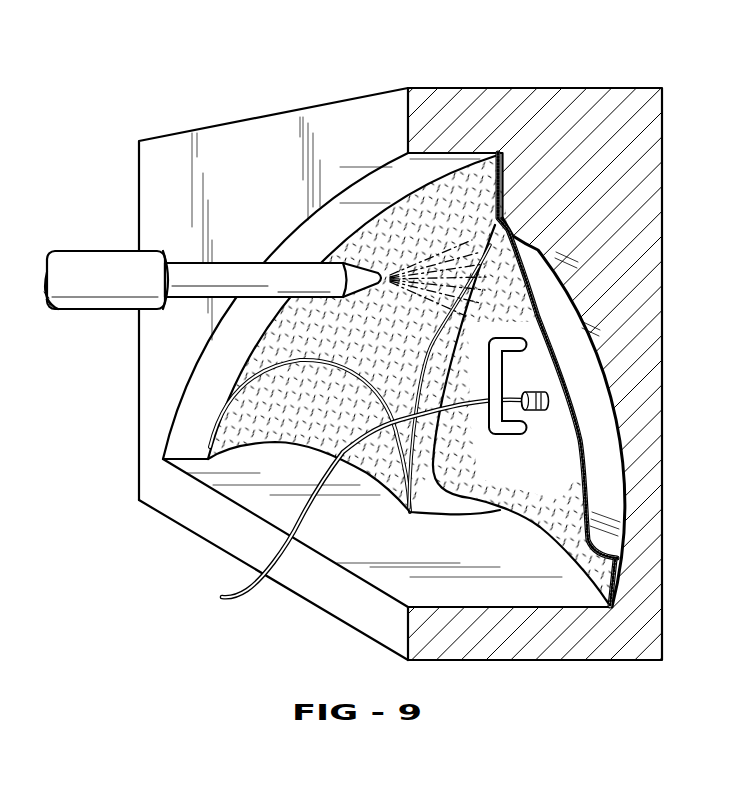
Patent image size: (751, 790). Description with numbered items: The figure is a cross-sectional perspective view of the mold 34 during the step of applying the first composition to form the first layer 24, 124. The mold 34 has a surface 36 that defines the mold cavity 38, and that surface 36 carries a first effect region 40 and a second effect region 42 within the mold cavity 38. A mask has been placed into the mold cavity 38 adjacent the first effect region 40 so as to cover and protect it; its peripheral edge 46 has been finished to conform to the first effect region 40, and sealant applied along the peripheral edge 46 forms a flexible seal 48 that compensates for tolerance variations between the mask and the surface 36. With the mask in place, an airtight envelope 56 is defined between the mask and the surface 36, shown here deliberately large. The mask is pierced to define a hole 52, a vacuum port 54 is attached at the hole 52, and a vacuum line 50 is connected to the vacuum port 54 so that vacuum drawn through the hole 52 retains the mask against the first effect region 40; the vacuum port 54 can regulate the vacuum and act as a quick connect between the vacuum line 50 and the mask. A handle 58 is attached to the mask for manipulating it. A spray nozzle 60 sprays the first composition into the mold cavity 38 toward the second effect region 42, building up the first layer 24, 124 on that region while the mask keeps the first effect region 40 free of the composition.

The first layer 24 is at (415, 340).
The first layer 124 is at (310, 436).
The mold 34 is at (483, 642).
The surface 36 is at (163, 153).
The mold cavity 38 is at (190, 467).
The first effect region 40 is at (626, 516).
The second effect region 42 is at (617, 587).
The peripheral edge 46 is at (488, 273).
The flexible seal 48 is at (540, 235).
The vacuum line 50 is at (243, 588).
The hole 52 is at (547, 400).
The vacuum port 54 is at (543, 412).
The airtight envelope 56 is at (542, 282).
The handle 58 is at (492, 424).
The spray nozzle 60 is at (98, 262).